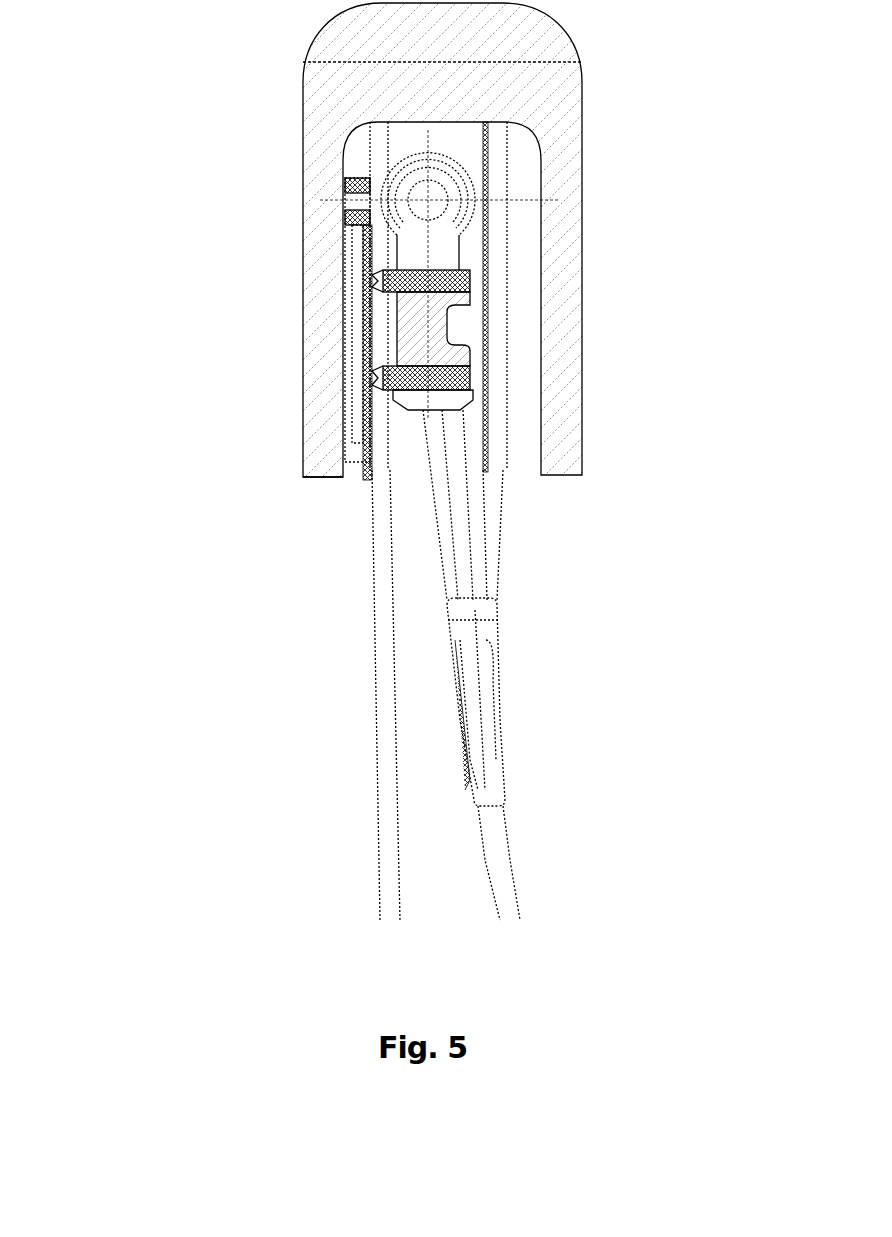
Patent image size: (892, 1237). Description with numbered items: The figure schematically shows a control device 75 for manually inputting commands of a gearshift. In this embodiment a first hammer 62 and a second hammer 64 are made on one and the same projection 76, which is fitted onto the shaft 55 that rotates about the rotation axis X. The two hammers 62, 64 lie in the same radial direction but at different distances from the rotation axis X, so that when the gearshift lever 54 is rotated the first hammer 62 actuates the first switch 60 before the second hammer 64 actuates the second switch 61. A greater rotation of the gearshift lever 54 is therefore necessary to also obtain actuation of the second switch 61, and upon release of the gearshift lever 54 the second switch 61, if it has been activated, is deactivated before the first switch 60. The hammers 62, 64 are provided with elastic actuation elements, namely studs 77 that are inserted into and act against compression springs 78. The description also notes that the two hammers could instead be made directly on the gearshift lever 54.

The rotation axis X is at (428, 198).
The shaft 55 is at (437, 188).
The projection 76 is at (437, 237).
The first switch 60 is at (343, 275).
The second switch 61 is at (357, 363).
The first hammer 62 is at (420, 308).
The stud 77 is at (387, 383).
The compression spring 78 is at (420, 393).
The second hammer 64 is at (434, 396).
The gearshift lever 54 is at (497, 708).
The control device 75 is at (228, 667).